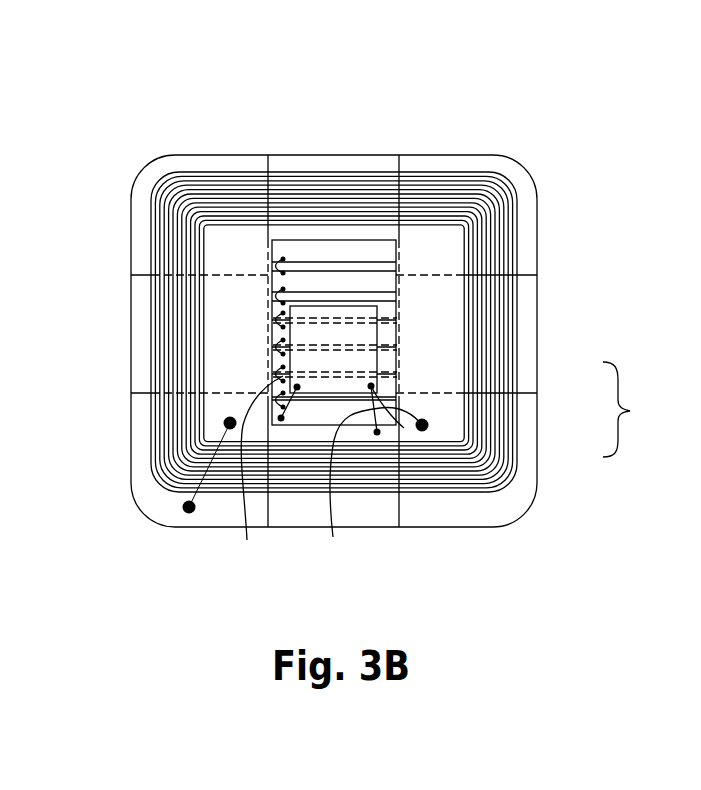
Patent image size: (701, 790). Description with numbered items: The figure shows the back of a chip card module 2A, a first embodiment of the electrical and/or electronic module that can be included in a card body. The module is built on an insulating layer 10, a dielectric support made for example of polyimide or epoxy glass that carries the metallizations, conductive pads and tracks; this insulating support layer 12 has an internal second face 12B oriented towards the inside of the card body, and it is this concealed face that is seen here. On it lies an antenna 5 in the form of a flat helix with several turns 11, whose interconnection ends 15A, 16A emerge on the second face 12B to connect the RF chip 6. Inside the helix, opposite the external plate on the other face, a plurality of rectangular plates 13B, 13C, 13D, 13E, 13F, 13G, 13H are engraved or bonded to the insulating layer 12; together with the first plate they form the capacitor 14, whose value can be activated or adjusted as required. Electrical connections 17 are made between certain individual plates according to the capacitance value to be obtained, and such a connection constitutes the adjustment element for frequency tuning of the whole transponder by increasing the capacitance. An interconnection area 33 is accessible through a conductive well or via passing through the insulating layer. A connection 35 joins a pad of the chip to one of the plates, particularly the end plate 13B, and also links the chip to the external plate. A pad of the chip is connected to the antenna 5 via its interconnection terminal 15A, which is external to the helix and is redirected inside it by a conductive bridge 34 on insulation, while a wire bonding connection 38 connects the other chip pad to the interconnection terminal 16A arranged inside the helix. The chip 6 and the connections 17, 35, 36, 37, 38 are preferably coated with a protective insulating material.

The chip card module 2A is at (503, 137).
The antenna 5 is at (388, 378).
The RF chip 6 is at (312, 328).
The insulating layer 10 is at (153, 497).
The turns 11 is at (475, 469).
The insulating support layer 12 is at (412, 158).
The second face 12B is at (140, 473).
The second conductive plate 13B is at (387, 403).
The second conductive plate 13C is at (390, 383).
The rectangular plate 13D is at (392, 357).
The rectangular plate 13E is at (438, 308).
The rectangular plate 13F is at (390, 302).
The rectangular plate 13G is at (388, 275).
The rectangular plate 13H is at (384, 256).
The capacitor 14 is at (634, 409).
The interconnection terminal 15A is at (188, 512).
The interconnection end 16A is at (420, 430).
The electrical connection 17 is at (275, 342).
The interconnection area 33 is at (377, 432).
The conductive bridge 34 is at (207, 466).
The connection 35 is at (281, 418).
The connection 36 is at (224, 409).
The connection 37 is at (370, 487).
The wire bonding connection 38 is at (404, 428).